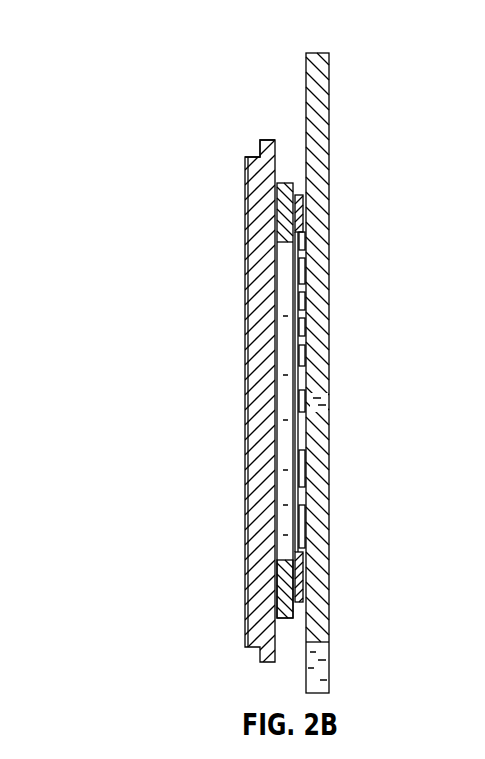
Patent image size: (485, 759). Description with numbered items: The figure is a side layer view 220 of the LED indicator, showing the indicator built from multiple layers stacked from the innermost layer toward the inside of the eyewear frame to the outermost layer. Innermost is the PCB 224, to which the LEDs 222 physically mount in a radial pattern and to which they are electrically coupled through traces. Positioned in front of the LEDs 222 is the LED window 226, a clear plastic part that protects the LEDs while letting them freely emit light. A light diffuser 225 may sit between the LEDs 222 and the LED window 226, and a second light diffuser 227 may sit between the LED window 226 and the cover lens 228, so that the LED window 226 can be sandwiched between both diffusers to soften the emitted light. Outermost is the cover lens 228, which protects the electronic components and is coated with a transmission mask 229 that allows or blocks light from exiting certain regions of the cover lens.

The side layer view 220 is at (108, 47).
The LEDs 222 is at (311, 280).
The PCB 224 is at (340, 521).
The light diffuser 225 is at (303, 187).
The LED window 226 is at (292, 589).
The light diffuser 227 is at (283, 178).
The cover lens 228 is at (251, 144).
The transmission mask 229 is at (237, 206).